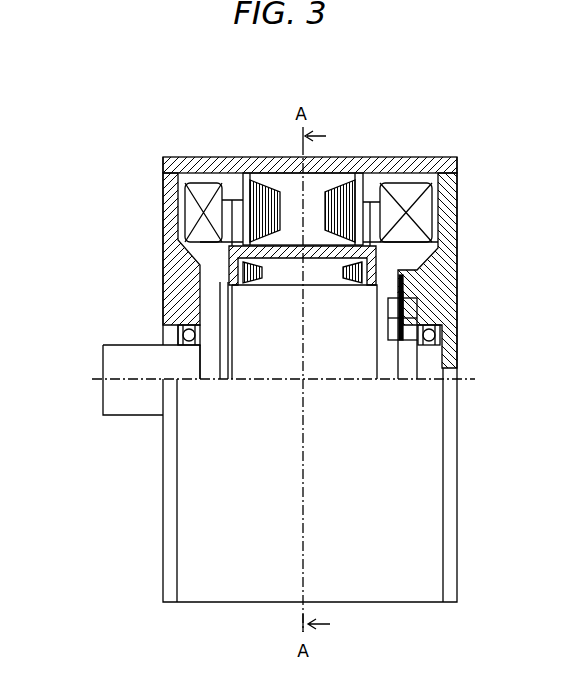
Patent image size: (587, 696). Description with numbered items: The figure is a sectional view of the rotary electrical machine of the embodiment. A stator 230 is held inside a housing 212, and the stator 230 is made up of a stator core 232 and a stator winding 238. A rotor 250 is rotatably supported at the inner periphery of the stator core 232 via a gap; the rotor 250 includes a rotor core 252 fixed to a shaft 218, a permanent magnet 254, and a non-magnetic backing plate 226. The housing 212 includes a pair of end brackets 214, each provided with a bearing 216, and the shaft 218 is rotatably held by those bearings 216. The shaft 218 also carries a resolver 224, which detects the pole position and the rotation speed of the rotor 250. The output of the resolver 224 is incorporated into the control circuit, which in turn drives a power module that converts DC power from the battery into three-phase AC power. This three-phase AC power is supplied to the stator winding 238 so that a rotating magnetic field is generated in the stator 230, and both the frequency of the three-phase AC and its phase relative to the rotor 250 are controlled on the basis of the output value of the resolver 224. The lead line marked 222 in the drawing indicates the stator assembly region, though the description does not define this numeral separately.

The housing 212 is at (199, 157).
The end bracket 214 is at (176, 274).
The bearing 216 is at (178, 325).
The shaft 218 is at (108, 362).
The stator 222 is at (313, 243).
The resolver 224 is at (408, 298).
The non-magnetic backing plate 226 is at (378, 262).
The stator 230 is at (254, 176).
The stator core 232 is at (291, 193).
The stator winding 238 is at (193, 212).
The rotor 250 is at (343, 286).
The rotor core 252 is at (283, 278).
The permanent magnet 254 is at (312, 263).